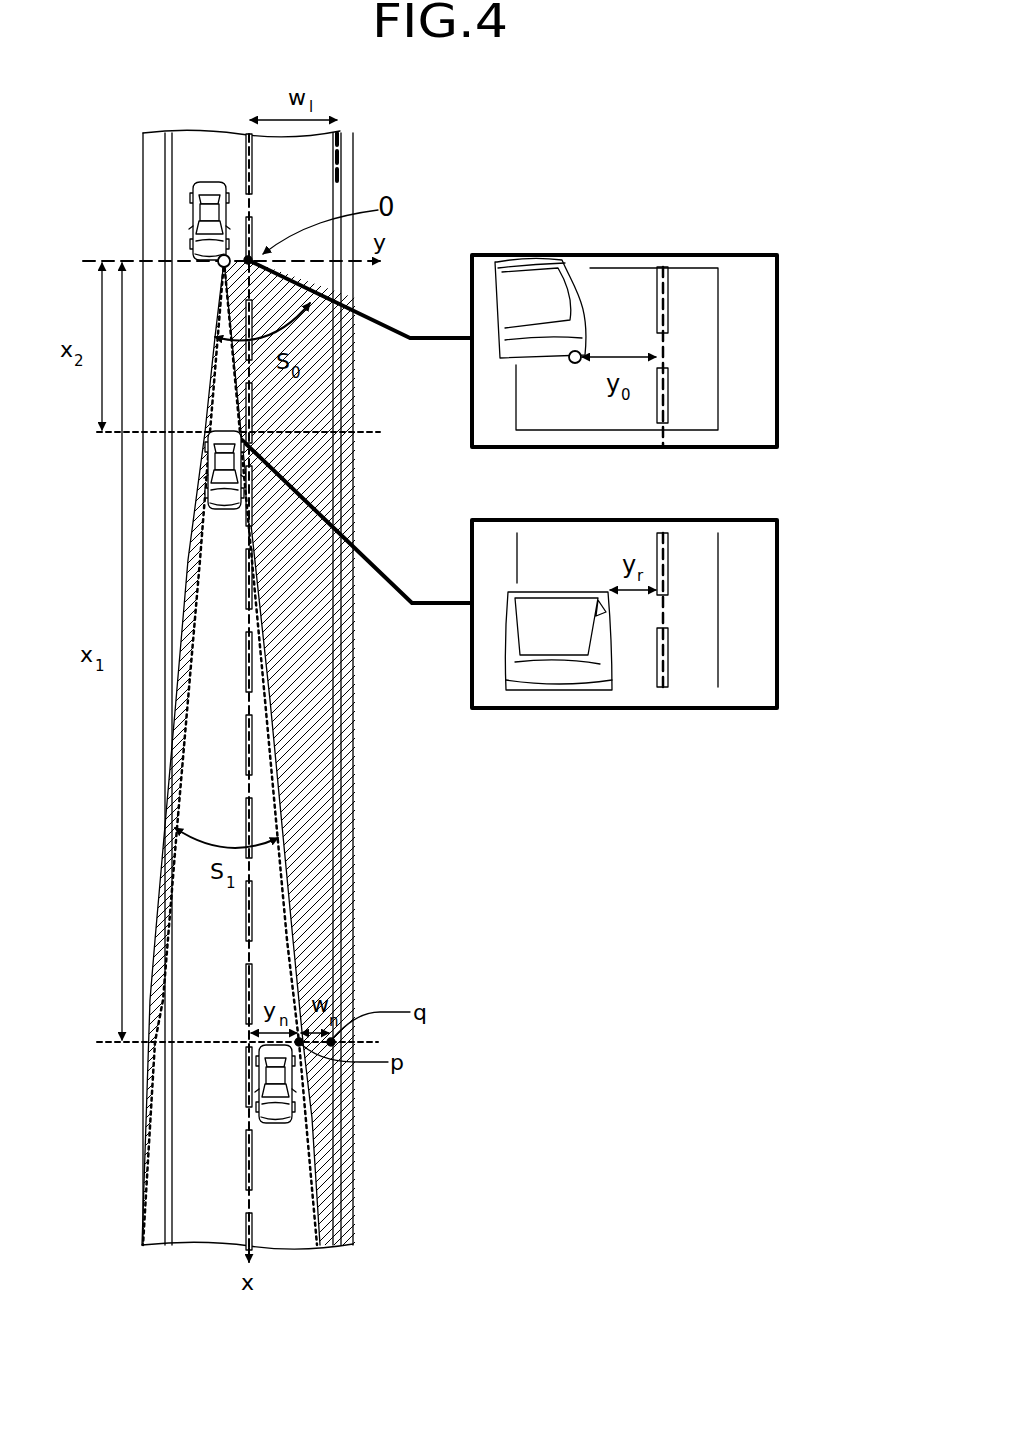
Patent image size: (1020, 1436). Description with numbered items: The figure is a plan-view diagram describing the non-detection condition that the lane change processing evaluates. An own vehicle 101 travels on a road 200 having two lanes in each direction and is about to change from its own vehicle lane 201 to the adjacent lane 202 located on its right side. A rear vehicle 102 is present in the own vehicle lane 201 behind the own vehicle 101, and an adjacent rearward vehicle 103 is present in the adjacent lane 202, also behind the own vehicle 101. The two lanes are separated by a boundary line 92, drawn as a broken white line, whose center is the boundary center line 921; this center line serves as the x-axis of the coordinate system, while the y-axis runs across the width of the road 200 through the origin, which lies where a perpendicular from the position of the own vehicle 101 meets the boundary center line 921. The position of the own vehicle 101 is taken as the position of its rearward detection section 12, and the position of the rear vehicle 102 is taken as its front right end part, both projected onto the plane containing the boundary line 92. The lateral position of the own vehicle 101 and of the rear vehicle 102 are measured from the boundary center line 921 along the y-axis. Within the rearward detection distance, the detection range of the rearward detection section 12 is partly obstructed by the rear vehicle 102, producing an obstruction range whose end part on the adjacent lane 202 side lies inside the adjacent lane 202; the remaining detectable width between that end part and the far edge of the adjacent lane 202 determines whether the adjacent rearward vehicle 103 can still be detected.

The rearward detection section 12 is at (222, 266).
The boundary line 92 is at (250, 757).
The boundary center line 921 is at (250, 795).
The own vehicle 101 is at (192, 190).
The rear vehicle 102 is at (207, 482).
The adjacent rearward vehicle 103 is at (292, 1088).
The road 200 is at (302, 1330).
The own vehicle lane 201 is at (195, 1222).
The adjacent lane 202 is at (292, 1222).